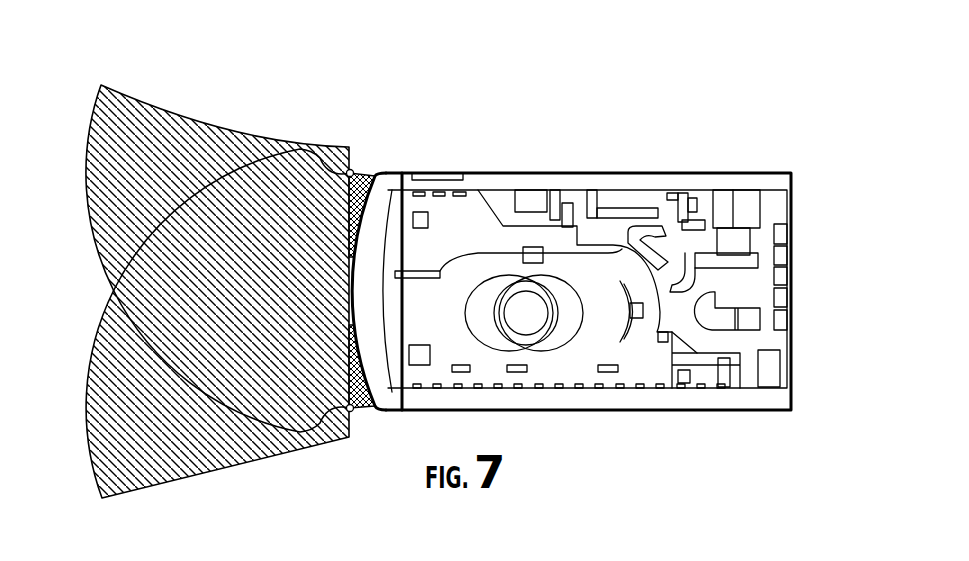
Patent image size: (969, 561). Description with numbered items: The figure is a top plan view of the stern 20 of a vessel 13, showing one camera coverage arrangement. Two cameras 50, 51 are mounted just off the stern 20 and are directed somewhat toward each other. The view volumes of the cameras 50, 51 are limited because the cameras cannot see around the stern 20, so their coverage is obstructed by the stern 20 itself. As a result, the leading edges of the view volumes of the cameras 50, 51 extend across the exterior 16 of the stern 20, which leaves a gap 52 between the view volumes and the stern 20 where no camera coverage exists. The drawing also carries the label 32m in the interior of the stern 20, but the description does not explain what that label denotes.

The vessel 13 is at (792, 218).
The exterior of the stern 16 is at (710, 172).
The stern 20 is at (381, 410).
The camera 50 is at (310, 430).
The camera 51 is at (324, 158).
The gap 52 is at (366, 173).
The mounting portion 32m is at (402, 288).